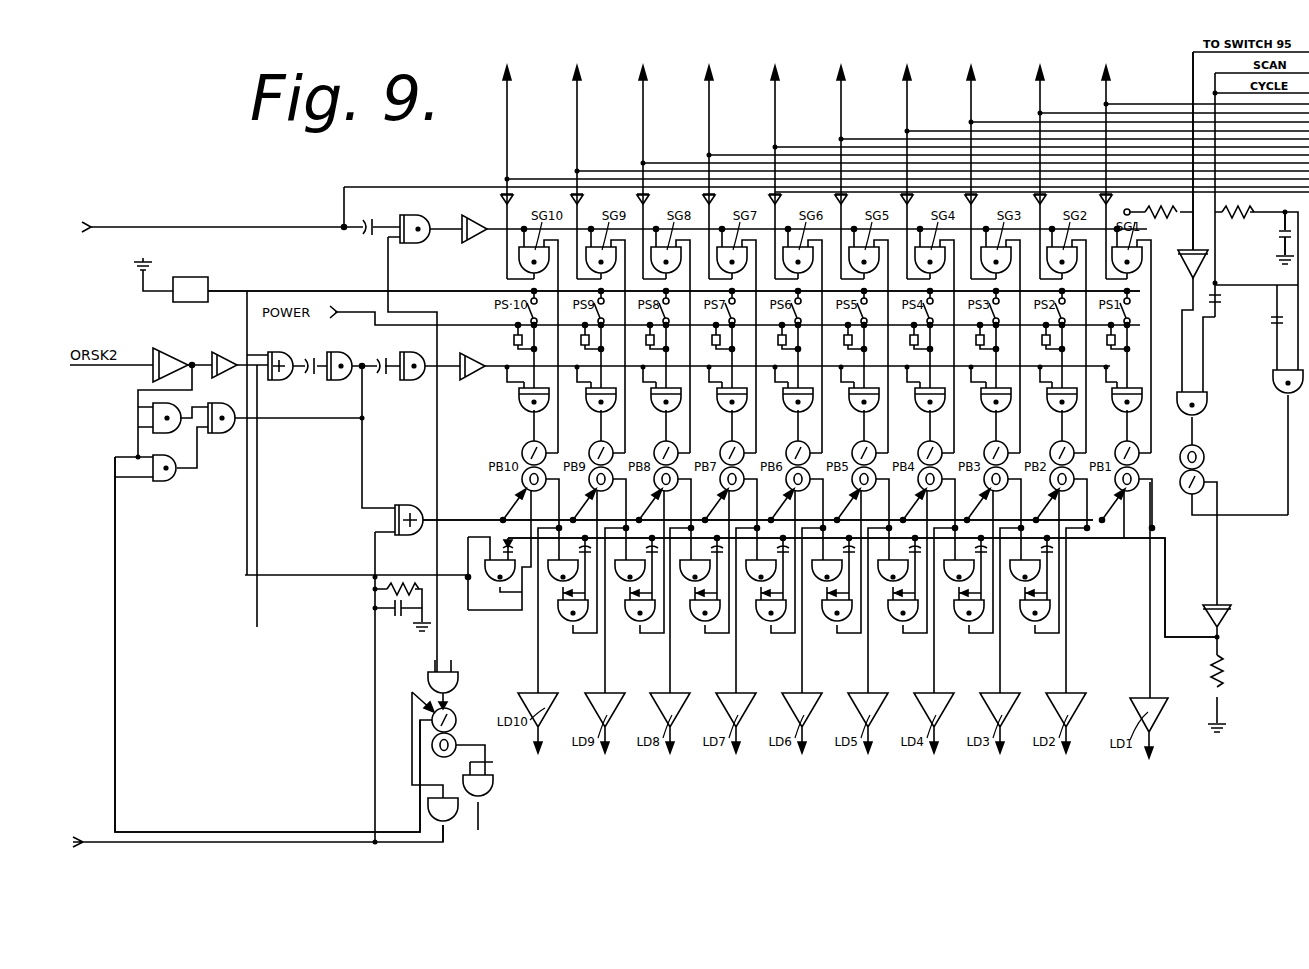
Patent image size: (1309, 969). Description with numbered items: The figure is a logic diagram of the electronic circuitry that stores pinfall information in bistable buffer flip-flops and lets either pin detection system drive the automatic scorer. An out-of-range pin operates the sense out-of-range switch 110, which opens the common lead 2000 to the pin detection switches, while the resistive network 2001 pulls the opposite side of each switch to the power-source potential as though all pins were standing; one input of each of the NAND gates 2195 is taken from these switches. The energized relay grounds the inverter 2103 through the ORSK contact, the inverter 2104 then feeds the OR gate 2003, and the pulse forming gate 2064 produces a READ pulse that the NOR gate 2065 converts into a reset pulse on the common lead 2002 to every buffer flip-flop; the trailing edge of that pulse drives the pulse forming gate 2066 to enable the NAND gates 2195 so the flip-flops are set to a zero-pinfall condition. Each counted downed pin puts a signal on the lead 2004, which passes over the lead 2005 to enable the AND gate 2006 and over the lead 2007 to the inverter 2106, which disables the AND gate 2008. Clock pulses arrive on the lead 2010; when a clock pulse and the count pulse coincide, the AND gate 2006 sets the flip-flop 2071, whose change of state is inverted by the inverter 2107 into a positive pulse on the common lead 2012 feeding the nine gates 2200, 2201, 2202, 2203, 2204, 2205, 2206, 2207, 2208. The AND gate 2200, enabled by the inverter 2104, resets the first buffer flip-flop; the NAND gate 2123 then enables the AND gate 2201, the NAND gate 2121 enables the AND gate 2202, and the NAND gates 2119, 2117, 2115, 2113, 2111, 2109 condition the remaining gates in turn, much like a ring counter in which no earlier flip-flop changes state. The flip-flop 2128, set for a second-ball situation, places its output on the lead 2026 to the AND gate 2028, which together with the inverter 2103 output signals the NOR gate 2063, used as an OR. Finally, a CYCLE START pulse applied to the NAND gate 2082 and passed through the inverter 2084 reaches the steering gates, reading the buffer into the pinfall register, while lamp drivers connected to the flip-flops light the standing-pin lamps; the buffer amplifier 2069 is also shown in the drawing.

The sense out-of-range switch 110 is at (212, 268).
The common lead 2000 is at (322, 279).
The resistive network 2001 is at (801, 339).
The common lead 2002 is at (476, 520).
The OR gate 2003 is at (287, 380).
The lead 2004 is at (1193, 88).
The lead 2005 is at (1285, 270).
The AND gate 2006 is at (1271, 378).
The lead 2007 is at (1185, 236).
The AND gate 2008 is at (1222, 420).
The lead 2010 is at (1218, 228).
The common lead 2012 is at (1165, 590).
The lead 2026 is at (420, 763).
The AND gate 2028 is at (153, 418).
The NOR gate 2063 is at (226, 433).
The pulse forming gate 2064 is at (341, 351).
The NOR gate 2065 is at (420, 495).
The pulse forming gate 2066 is at (393, 380).
The amplifier 2069 is at (475, 378).
The flip-flop 2071 is at (1205, 468).
The NAND gate 2082 is at (422, 207).
The inverter 2084 is at (475, 243).
The inverter 2103 is at (178, 340).
The inverter 2104 is at (236, 342).
The inverter 2106 is at (1205, 262).
The inverter 2107 is at (1232, 617).
The NAND gate 2109 is at (1032, 575).
The NAND gate 2111 is at (966, 575).
The NAND gate 2113 is at (900, 575).
The NAND gate 2115 is at (834, 575).
The NAND gate 2117 is at (768, 575).
The NAND gate 2119 is at (702, 575).
The NAND gate 2121 is at (637, 575).
The NAND gate 2123 is at (570, 575).
The flip-flop 2128 is at (456, 725).
The NAND gates 2195 is at (822, 411).
The AND gate 2200 is at (495, 592).
The AND gate 2201 is at (575, 640).
The AND gate 2202 is at (642, 640).
The AND gate 2203 is at (707, 640).
The AND gate 2204 is at (773, 640).
The AND gate 2205 is at (839, 640).
The AND gate 2206 is at (905, 640).
The AND gate 2207 is at (971, 640).
The AND gate 2208 is at (1037, 640).